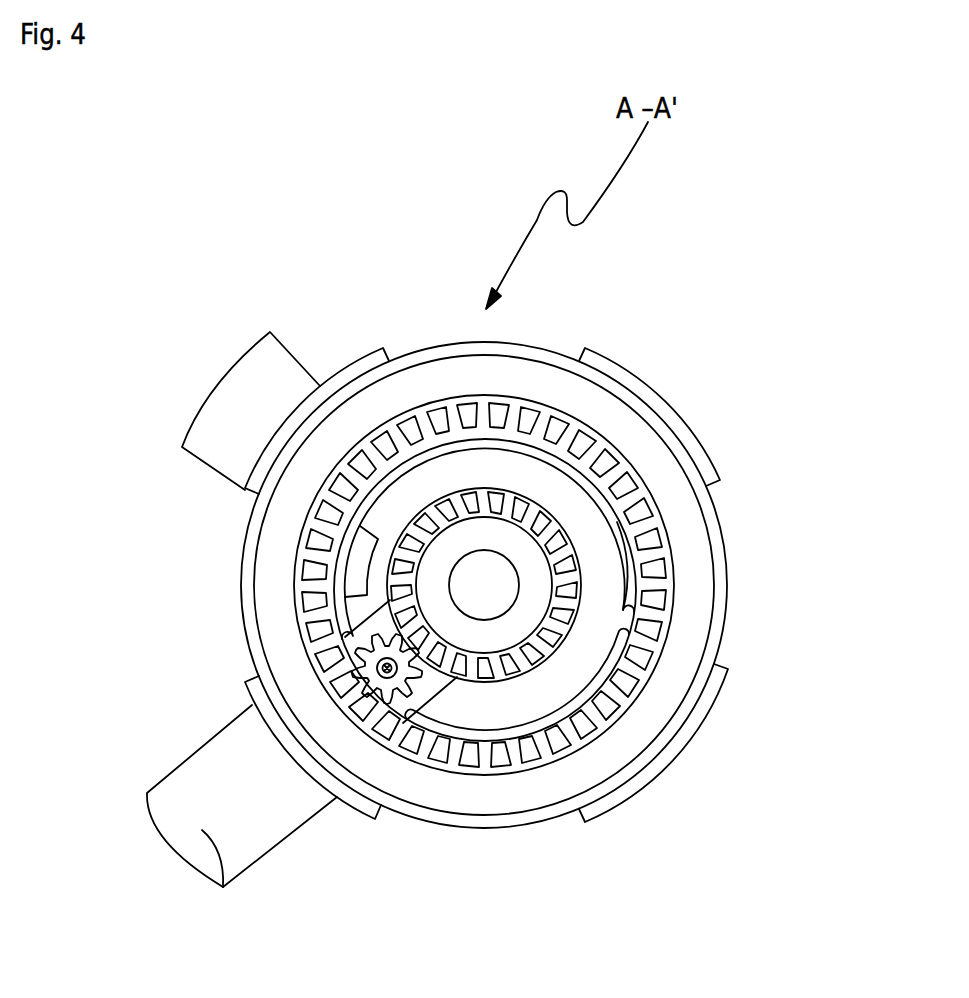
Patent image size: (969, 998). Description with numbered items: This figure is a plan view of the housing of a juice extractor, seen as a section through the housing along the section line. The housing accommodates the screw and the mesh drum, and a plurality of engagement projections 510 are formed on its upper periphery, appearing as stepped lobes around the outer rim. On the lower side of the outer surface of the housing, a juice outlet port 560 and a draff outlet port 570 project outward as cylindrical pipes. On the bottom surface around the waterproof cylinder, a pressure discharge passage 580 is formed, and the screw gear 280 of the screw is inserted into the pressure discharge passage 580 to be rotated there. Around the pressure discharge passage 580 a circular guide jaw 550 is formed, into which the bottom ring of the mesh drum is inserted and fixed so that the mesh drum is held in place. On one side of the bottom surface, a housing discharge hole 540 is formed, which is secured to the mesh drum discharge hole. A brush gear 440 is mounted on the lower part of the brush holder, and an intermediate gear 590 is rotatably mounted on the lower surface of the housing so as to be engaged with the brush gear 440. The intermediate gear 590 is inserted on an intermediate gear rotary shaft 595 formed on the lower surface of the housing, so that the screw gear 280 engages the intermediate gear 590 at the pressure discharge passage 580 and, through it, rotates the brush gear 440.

The screw gear 280 is at (570, 566).
The brush gear 440 is at (660, 627).
The engagement projections 510 is at (670, 752).
The housing discharge hole 540 is at (358, 549).
The circular guide jaw 550 is at (625, 517).
The juice outlet port 560 is at (222, 858).
The draff outlet port 570 is at (258, 390).
The pressure discharge passage 580 is at (512, 497).
The intermediate gear 590 is at (397, 690).
The intermediate gear rotary shaft 595 is at (378, 666).